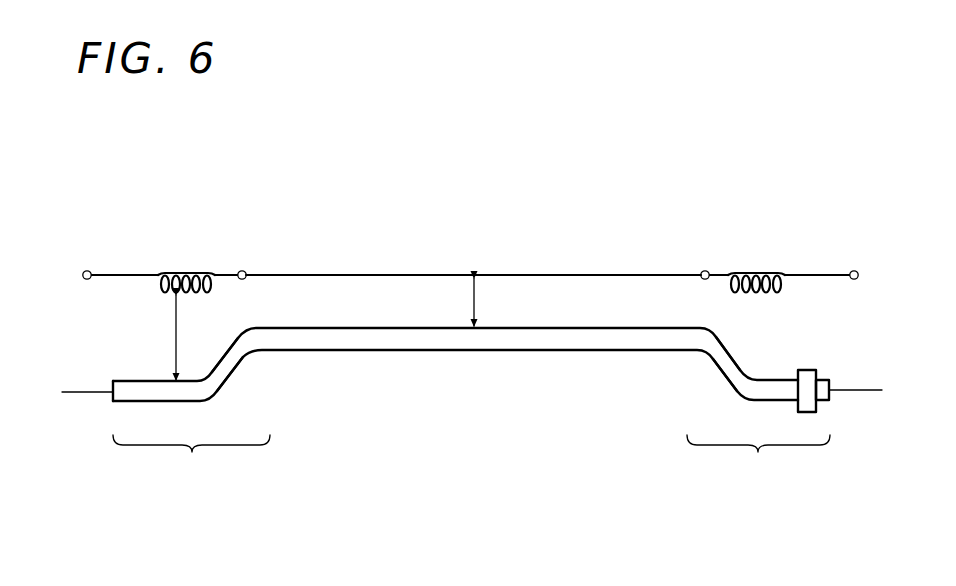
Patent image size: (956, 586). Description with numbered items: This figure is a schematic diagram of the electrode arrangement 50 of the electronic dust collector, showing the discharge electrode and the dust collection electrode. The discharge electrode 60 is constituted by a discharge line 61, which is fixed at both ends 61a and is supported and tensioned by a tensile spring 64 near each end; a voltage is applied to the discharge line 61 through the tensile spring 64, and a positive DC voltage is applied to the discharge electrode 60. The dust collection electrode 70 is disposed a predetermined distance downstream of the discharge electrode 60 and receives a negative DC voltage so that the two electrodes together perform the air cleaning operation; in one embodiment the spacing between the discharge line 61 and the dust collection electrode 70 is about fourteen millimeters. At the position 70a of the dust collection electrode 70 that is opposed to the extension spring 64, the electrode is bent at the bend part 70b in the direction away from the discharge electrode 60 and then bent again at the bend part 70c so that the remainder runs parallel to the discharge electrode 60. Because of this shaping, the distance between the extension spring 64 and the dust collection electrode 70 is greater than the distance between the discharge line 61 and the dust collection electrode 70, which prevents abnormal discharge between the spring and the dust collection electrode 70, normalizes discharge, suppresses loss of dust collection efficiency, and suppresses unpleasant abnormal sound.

The antenna device 50 is at (308, 159).
The discharge electrode 60 is at (552, 268).
The discharge line 61 is at (450, 274).
The both ends 61a is at (267, 274).
The tensile spring 64 is at (178, 273).
The dust collection electrode 70 is at (508, 354).
The position opposed to the extension spring 70a is at (471, 461).
The bend part 70b is at (254, 359).
The bend part 70c is at (218, 403).